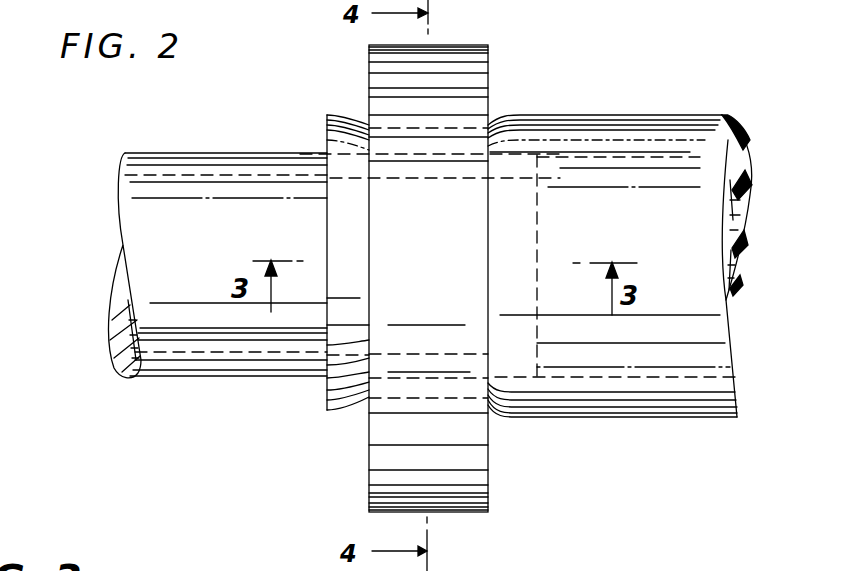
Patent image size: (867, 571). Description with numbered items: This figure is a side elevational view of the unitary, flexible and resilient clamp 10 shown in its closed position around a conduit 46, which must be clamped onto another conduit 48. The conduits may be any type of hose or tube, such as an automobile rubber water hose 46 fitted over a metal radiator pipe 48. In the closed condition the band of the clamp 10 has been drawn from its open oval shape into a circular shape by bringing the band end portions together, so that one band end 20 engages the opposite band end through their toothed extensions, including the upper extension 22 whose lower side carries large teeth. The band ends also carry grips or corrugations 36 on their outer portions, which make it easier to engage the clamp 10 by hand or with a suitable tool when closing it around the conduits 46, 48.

The clamp 10 is at (503, 86).
The band end 20 is at (383, 75).
The upper extension 22 is at (392, 115).
The grips or corrugations 36 is at (465, 46).
The conduit 46 is at (650, 226).
The conduit 48 is at (212, 246).